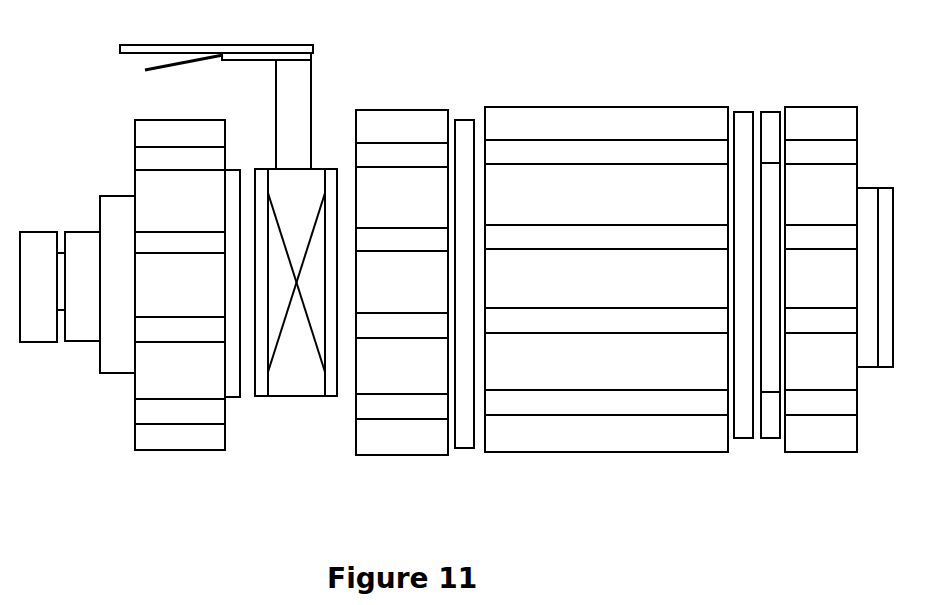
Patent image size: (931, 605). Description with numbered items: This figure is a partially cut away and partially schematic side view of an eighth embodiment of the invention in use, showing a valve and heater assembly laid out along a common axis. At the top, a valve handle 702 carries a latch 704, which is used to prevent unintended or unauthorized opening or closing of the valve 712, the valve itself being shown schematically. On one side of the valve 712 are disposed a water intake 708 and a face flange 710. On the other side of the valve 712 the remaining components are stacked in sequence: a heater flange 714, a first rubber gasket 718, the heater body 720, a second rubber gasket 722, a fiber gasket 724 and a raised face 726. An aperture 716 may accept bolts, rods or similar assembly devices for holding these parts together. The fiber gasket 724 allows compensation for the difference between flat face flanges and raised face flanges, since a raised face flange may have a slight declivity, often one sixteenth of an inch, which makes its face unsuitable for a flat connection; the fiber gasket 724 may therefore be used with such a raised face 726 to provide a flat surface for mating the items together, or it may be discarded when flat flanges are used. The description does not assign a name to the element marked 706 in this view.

The valve handle 702 is at (162, 45).
The latch 704 is at (168, 67).
The support post 706 is at (315, 167).
The water intake 708 is at (35, 343).
The face flange 710 is at (182, 452).
The valve 712 is at (300, 397).
The heater flange 714 is at (394, 456).
The aperture 716 is at (448, 402).
The first rubber gasket 718 is at (463, 449).
The heater body 720 is at (530, 453).
The second rubber gasket 722 is at (755, 440).
The fiber gasket 724 is at (780, 440).
The raised face 726 is at (838, 452).